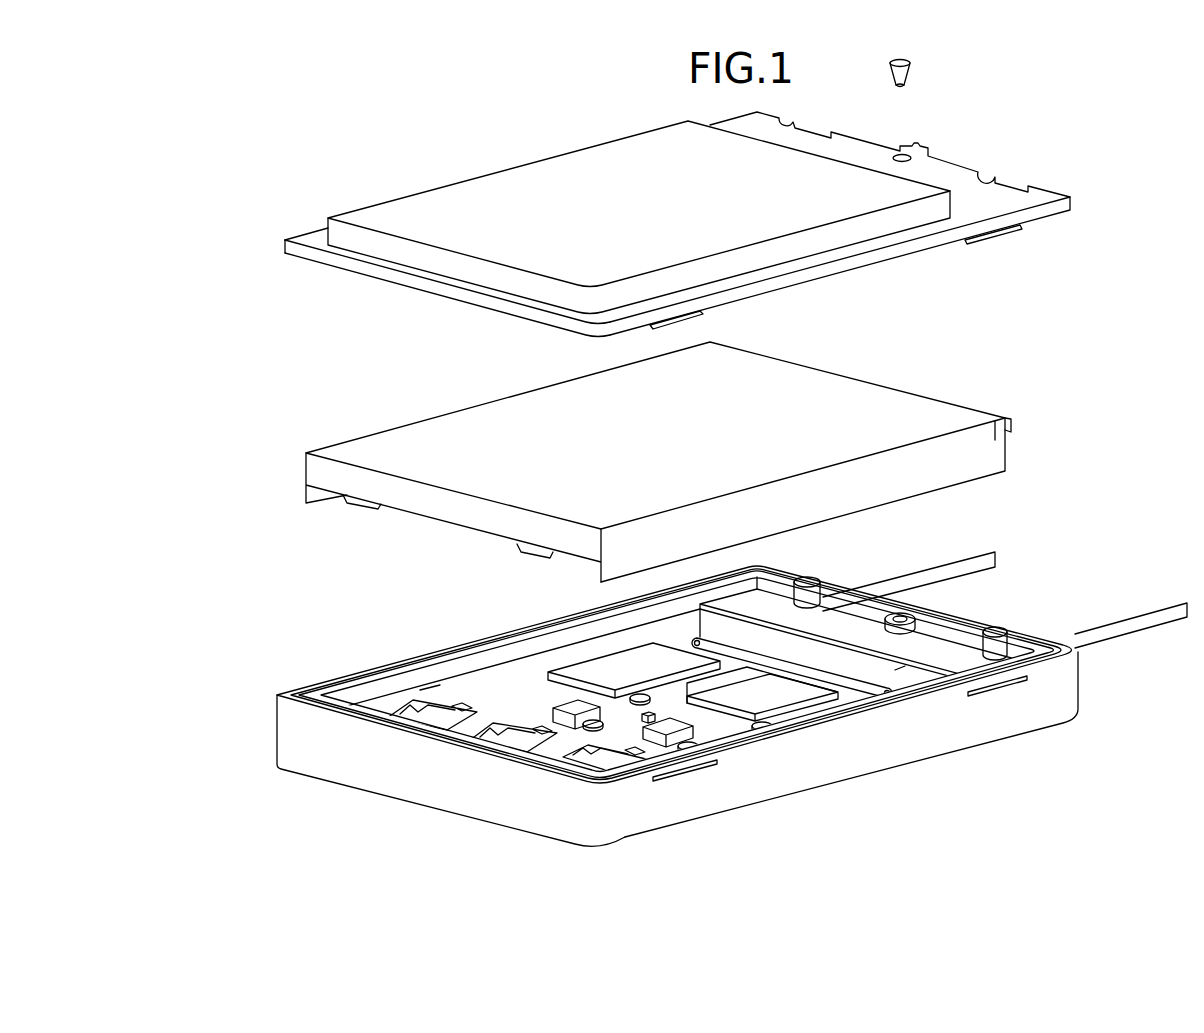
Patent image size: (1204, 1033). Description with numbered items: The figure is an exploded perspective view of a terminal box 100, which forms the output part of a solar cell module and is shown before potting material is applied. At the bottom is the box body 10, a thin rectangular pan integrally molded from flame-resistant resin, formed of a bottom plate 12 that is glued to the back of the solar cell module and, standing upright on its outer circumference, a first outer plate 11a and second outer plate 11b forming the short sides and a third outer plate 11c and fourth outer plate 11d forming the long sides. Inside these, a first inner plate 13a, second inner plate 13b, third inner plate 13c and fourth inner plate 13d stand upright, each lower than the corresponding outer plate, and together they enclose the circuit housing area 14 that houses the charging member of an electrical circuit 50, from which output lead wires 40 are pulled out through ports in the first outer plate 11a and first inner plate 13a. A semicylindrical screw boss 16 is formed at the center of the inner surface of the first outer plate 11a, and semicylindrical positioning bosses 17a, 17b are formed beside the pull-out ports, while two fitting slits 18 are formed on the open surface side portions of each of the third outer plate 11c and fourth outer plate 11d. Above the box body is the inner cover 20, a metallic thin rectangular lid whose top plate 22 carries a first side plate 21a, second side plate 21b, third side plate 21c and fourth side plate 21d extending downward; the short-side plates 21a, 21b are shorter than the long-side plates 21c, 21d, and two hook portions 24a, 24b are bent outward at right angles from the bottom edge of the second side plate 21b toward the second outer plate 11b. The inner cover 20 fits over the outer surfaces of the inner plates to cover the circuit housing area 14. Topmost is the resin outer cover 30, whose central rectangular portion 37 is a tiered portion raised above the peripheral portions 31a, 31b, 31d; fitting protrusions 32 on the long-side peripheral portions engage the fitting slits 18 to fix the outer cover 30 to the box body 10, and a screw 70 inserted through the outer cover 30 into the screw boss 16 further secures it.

The terminal box 100 is at (1113, 156).
The box body 10 is at (1060, 731).
The first outer plate 11a is at (848, 582).
The second outer plate 11b is at (393, 772).
The third outer plate 11c is at (477, 640).
The fourth outer plate 11d is at (897, 753).
The bottom plate 12 is at (970, 750).
The first inner plate 13a is at (900, 668).
The second inner plate 13b is at (363, 703).
The third inner plate 13c is at (437, 678).
The fourth inner plate 13d is at (803, 707).
The circuit housing area 14 is at (570, 645).
The screw boss 16 is at (910, 615).
The positioning boss 17a is at (1040, 637).
The positioning boss 17b is at (818, 580).
The fitting slit 18 is at (673, 775).
The inner cover 20 is at (959, 492).
The first side plate 21a is at (1014, 427).
The second side plate 21b is at (418, 507).
The third side plate 21c is at (306, 492).
The fourth side plate 21d is at (1000, 453).
The top plate 22 is at (437, 432).
The hook portion 24a is at (523, 550).
The hook portion 24b is at (355, 508).
The outer cover 30 is at (1048, 224).
The peripheral portion 31a is at (940, 173).
The peripheral portion 31b is at (455, 282).
The peripheral portion 31d is at (835, 257).
The fitting protrusion 32 is at (703, 320).
The central rectangular portion 37 is at (445, 212).
The output lead wire 40 is at (1122, 630).
The electrical circuit 50 is at (712, 743).
The screw 70 is at (913, 64).